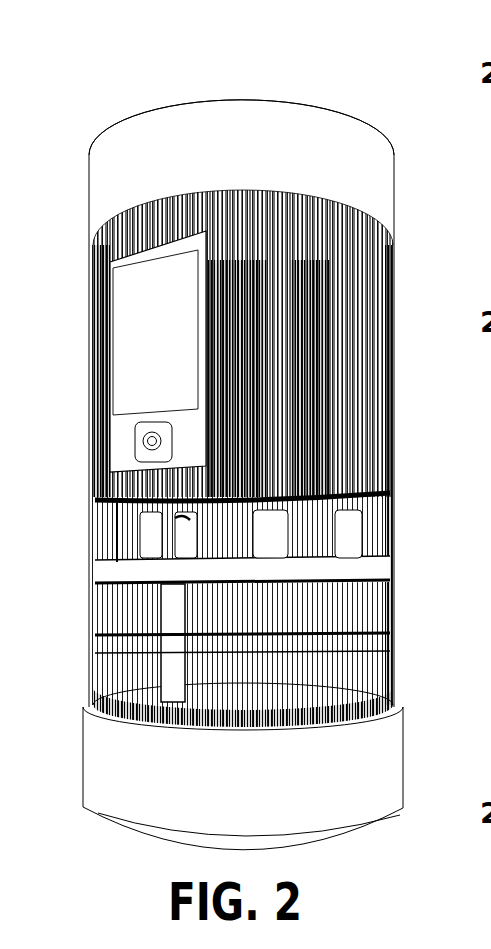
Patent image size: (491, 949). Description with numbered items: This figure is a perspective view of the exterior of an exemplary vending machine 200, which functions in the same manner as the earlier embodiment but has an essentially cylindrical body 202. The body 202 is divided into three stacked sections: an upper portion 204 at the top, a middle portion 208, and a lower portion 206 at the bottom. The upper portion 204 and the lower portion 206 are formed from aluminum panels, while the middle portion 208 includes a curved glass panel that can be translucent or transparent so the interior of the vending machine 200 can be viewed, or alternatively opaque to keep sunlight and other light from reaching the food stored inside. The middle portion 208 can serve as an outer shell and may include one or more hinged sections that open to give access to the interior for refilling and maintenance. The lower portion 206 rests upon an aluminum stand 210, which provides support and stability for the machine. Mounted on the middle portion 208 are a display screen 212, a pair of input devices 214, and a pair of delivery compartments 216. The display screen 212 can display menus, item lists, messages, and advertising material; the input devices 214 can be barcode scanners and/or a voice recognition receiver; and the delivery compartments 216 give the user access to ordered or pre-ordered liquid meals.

The vending machine 200 is at (249, 433).
The cylindrical body 202 is at (377, 313).
The upper portion 204 is at (313, 133).
The lower portion 206 is at (383, 767).
The middle portion 208 is at (325, 398).
The aluminum stand 210 is at (333, 832).
The display screen 212 is at (145, 310).
The input devices 214 is at (147, 443).
The delivery compartments 216 is at (147, 545).